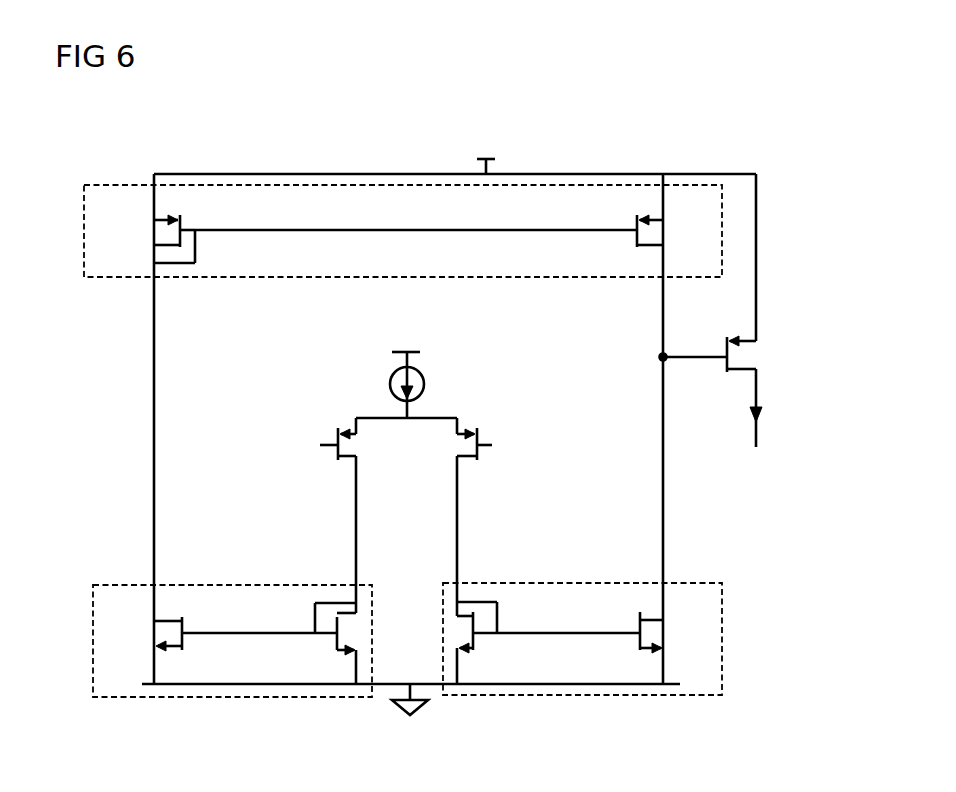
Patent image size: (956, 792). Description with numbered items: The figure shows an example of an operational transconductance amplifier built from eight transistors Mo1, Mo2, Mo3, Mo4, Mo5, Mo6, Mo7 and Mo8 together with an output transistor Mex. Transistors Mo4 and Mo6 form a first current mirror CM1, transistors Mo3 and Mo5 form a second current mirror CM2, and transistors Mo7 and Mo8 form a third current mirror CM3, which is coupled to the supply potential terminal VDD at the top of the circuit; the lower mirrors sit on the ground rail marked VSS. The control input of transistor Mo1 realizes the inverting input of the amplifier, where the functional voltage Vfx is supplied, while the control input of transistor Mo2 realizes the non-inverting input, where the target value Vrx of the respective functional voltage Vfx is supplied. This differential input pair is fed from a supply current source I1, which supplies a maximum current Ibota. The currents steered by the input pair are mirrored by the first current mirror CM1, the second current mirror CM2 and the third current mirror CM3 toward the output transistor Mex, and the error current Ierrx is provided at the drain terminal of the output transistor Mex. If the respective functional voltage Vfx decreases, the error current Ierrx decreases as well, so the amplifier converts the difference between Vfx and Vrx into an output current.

The supply potential terminal VDD is at (494, 154).
The negative supply voltage / ground VSS is at (418, 710).
The third current mirror CM3 is at (507, 278).
The second current mirror CM2 is at (240, 572).
The first current mirror CM1 is at (572, 563).
The transistor Mo7 is at (149, 239).
The transistor Mo8 is at (674, 231).
The output transistor Mex is at (732, 310).
The error current Ierrx is at (780, 415).
The supply current source I1 is at (389, 379).
The maximum current Ibota is at (459, 385).
The transistor Mo1 is at (360, 444).
The transistor Mo2 is at (480, 457).
The functional voltage Vfx is at (297, 445).
The target value Vrx is at (512, 445).
The transistor Mo3 is at (329, 643).
The transistor Mo4 is at (548, 643).
The transistor Mo5 is at (222, 634).
The transistor Mo6 is at (676, 632).